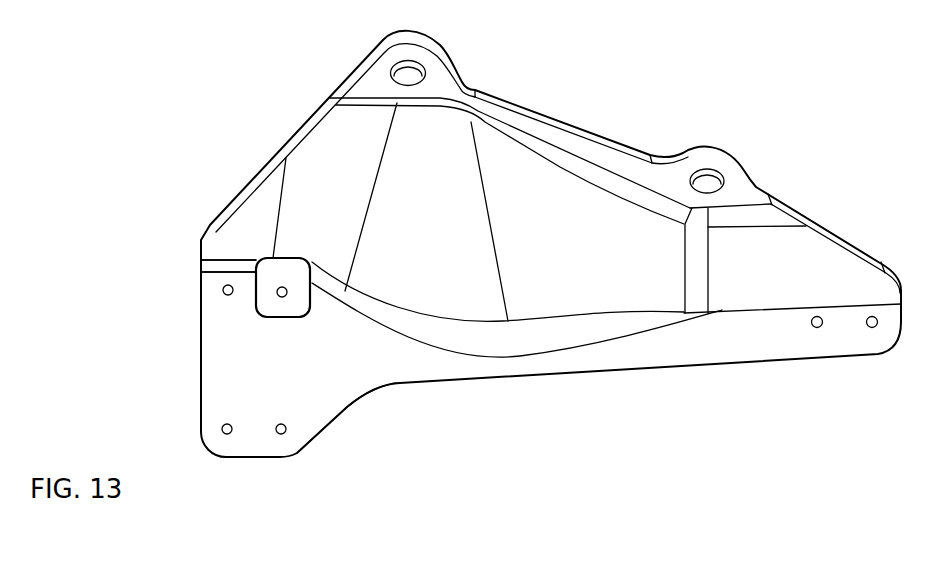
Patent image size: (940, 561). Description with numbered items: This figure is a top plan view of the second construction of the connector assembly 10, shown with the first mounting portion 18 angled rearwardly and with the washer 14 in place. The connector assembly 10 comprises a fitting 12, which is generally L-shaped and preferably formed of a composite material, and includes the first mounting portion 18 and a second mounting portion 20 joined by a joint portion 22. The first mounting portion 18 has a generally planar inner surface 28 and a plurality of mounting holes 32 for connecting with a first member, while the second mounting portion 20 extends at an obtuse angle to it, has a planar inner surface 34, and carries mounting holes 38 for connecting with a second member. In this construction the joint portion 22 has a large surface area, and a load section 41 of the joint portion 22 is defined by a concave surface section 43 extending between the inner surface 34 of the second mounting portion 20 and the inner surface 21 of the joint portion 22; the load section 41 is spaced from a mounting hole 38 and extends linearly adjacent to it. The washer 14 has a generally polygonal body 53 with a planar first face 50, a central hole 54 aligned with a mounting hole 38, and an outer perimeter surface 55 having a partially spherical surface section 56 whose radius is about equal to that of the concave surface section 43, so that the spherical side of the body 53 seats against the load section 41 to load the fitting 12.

The connector assembly 10 is at (126, 150).
The fitting 12 is at (244, 108).
The washer 14 is at (332, 281).
The first mounting portion 18 is at (548, 86).
The second mounting portion 20 is at (170, 383).
The inner surface of the joint portion 21 is at (568, 208).
The joint portion 22 is at (275, 152).
The inner surface of the first mounting portion 28 is at (635, 166).
The mounting hole 32 is at (408, 70).
The inner surface of the second mounting portion 34 is at (327, 394).
The second portion mounting hole 38 is at (222, 292).
The load section 41 is at (249, 250).
The concave surface section 43 is at (207, 267).
The first face 50 is at (264, 299).
The polygonal body 53 is at (313, 323).
The central hole 54 is at (284, 288).
The outer perimeter surface 55 is at (283, 322).
The partially spherical surface section 56 is at (292, 258).